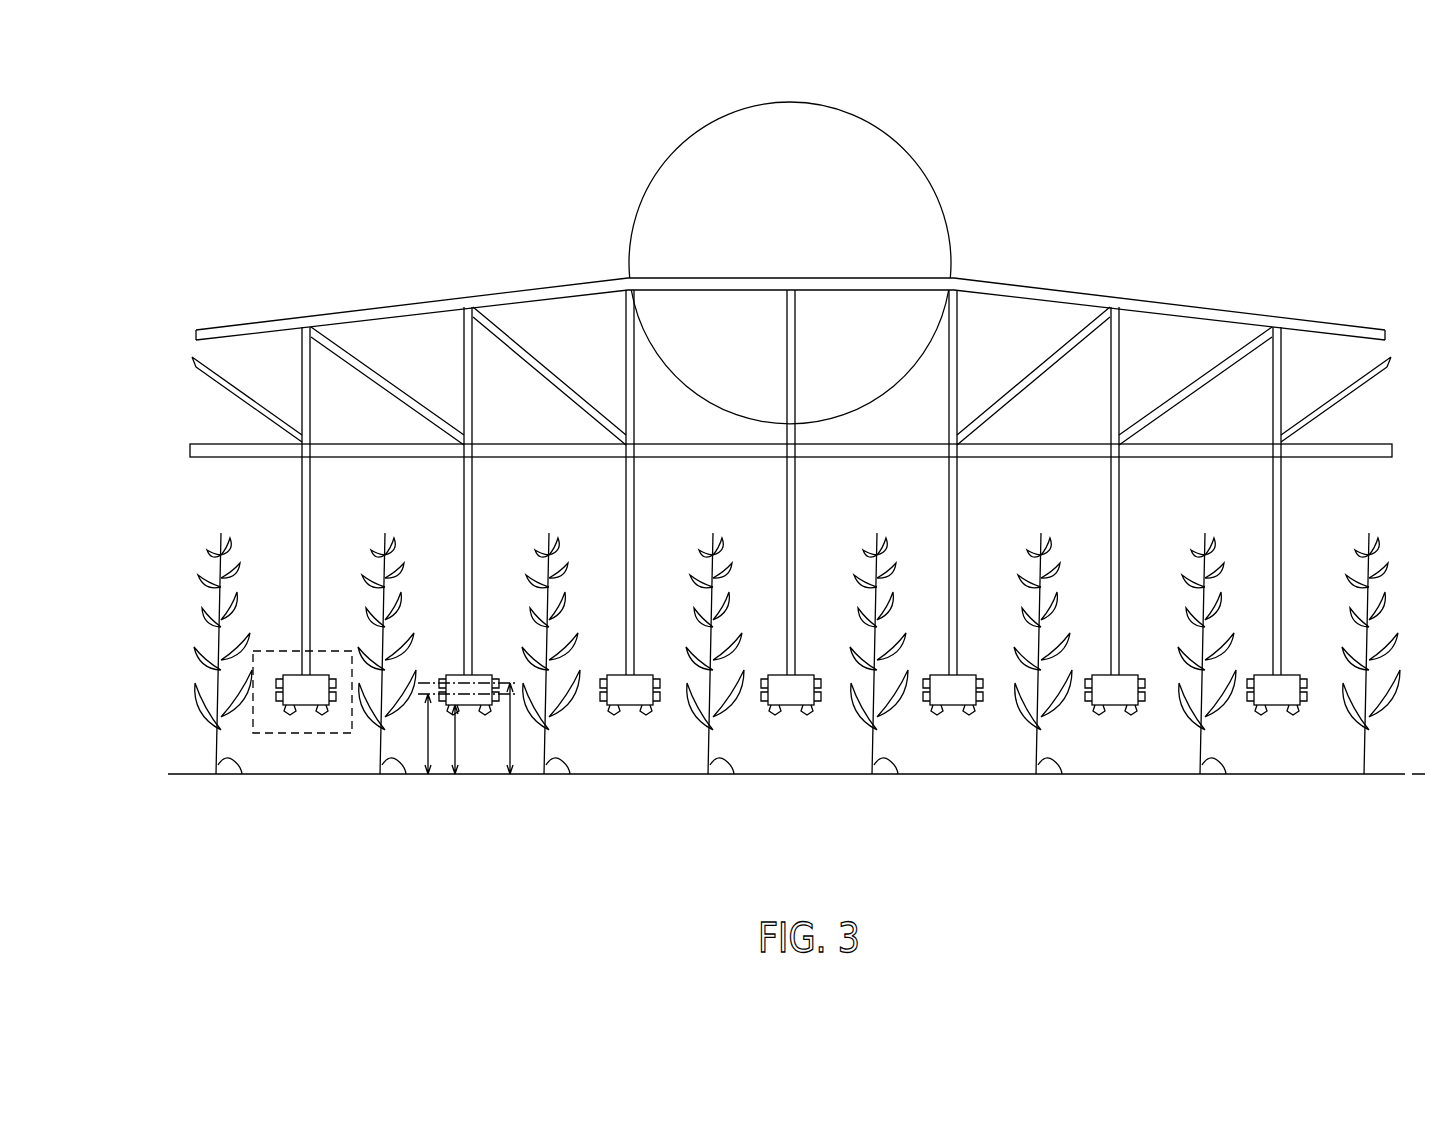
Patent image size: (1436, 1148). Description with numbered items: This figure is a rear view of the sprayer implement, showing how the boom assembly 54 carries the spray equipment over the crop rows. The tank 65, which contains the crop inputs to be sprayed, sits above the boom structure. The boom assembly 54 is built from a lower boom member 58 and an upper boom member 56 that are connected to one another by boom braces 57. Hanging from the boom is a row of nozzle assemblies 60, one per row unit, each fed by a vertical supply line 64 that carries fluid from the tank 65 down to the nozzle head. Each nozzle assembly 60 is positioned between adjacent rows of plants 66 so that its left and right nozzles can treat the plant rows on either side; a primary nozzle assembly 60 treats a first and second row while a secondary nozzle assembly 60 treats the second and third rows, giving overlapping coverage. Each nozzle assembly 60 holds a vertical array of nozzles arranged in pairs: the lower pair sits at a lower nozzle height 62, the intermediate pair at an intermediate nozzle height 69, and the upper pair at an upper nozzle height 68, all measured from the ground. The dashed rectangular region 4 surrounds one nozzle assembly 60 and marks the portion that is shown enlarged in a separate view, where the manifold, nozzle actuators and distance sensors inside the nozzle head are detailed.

The boom assembly 54 is at (252, 237).
The tank 65 is at (735, 165).
The upper boom member 56 is at (527, 297).
The boom brace 57 is at (393, 393).
The lower boom member 58 is at (517, 452).
The vertical supply line 64 is at (302, 494).
The nozzle assembly 60 is at (306, 690).
The plant 66 is at (242, 774).
The rectangular region 4 is at (283, 652).
The intermediate nozzle height 69 is at (426, 735).
The lower nozzle height 62 is at (453, 722).
The upper nozzle height 68 is at (500, 742).